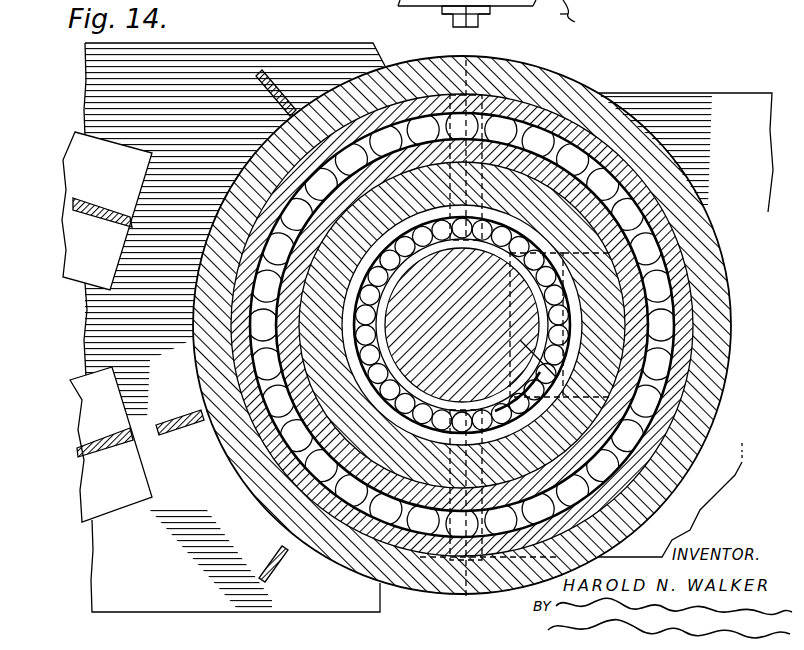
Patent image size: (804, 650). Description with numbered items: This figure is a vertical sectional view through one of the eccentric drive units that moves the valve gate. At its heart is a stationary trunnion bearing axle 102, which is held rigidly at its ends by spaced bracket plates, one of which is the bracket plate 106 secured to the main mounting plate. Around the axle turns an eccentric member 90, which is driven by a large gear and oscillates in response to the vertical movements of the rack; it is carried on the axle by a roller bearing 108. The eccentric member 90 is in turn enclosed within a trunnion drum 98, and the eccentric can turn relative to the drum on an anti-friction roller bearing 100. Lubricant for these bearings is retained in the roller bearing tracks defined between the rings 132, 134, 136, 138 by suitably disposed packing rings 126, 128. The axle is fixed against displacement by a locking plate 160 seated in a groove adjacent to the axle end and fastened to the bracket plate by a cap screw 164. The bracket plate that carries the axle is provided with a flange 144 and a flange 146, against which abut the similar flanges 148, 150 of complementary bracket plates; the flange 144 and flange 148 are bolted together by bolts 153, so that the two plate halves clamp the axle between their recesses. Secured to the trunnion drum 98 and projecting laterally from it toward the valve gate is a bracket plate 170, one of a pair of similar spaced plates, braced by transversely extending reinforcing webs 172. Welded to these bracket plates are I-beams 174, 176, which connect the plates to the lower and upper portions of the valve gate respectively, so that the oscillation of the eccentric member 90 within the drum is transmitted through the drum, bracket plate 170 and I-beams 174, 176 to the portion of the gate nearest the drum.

The bracket plate 170 is at (236, 58).
The reinforcing web 172 is at (264, 70).
The I-beam 174 is at (83, 491).
The I-beam 176 is at (75, 245).
The anti-friction roller bearing 100 is at (258, 327).
The eccentric member 90 is at (243, 420).
The stationary trunnion bearing axle 102 is at (580, 335).
The roller bearing 108 is at (650, 404).
The bracket plate 106 is at (714, 104).
The trunnion drum 98 is at (672, 156).
The ring 138 is at (610, 235).
The ring 136 is at (626, 270).
The ring 132 is at (600, 300).
The ring 134 is at (575, 290).
The flange 150 is at (398, 588).
The flange 146 is at (478, 588).
The packing ring 126 is at (378, 5).
The flange 148 is at (450, 20).
The bolt 153 is at (482, 16).
The flange 144 is at (465, 30).
The cap screw 164 is at (550, 2).
The packing ring 128 is at (585, 11).
The locking plate 160 is at (582, 26).